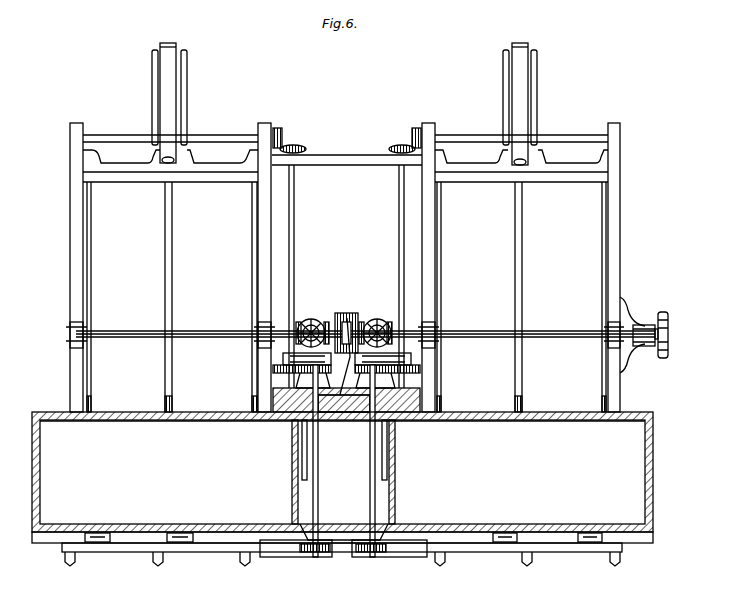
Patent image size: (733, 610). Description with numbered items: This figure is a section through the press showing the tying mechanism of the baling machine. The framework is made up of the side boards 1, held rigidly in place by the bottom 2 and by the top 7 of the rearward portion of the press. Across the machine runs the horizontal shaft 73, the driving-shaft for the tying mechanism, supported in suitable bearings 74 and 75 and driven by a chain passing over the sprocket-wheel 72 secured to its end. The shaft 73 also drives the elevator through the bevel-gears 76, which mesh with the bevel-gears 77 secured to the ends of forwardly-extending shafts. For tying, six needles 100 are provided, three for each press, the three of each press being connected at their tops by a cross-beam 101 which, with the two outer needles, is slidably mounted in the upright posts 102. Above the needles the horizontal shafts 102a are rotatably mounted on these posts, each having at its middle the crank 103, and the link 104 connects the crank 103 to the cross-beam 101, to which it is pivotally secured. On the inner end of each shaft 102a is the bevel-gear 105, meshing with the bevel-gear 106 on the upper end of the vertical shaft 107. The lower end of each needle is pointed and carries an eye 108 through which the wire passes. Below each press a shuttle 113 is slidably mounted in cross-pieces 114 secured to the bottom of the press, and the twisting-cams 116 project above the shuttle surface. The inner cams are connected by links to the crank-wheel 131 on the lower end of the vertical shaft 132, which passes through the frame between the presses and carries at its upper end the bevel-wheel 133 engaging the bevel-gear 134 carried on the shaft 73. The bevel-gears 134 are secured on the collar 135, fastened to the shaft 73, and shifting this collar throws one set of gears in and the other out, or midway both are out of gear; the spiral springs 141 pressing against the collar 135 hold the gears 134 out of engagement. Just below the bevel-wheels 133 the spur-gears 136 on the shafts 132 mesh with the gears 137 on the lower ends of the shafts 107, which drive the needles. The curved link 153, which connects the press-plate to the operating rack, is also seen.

The side boards 1 is at (40, 468).
The bottom 2 is at (208, 532).
The top 7 is at (127, 422).
The sprocket-wheel 72 is at (670, 334).
The horizontal shaft 73 is at (500, 338).
The bearing 74 is at (83, 325).
The bearing 75 is at (640, 350).
The bevel-gears 76 is at (305, 319).
The bevel-gears 77 is at (326, 320).
The needles 100 is at (91, 254).
The cross-beam 101 is at (118, 184).
The upright posts 102 is at (70, 197).
The horizontal shafts 102a is at (207, 135).
The crank 103 is at (152, 76).
The link 104 is at (172, 66).
The bevel-gear 105 is at (283, 133).
The bevel-gear 106 is at (300, 147).
The vertical shaft 107 is at (294, 248).
The eye 108 is at (165, 403).
The shuttle 113 is at (143, 553).
The cross-pieces 114 is at (70, 566).
The twisting-cams 116 is at (108, 532).
The crank-wheel 131 is at (345, 557).
The vertical shafts 132 is at (318, 478).
The bevel-wheels 133 is at (283, 359).
The bevel-gears 134 is at (353, 318).
The collar 135 is at (342, 414).
The spur-gears 136 is at (420, 392).
The gears 137 is at (273, 370).
The spiral springs 141 is at (337, 318).
The curved link 153 is at (302, 462).